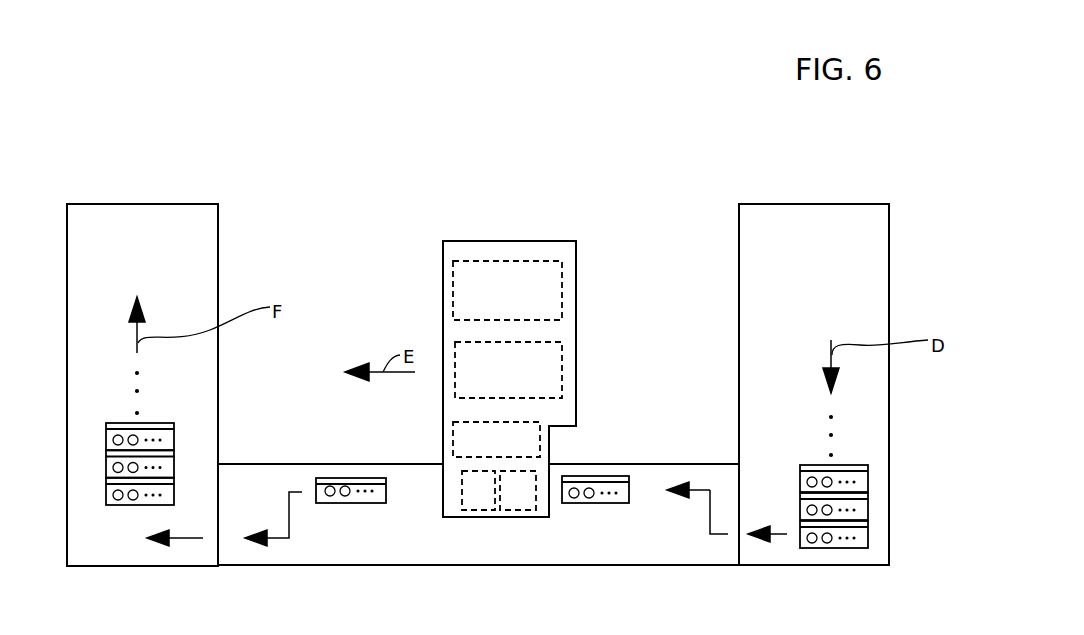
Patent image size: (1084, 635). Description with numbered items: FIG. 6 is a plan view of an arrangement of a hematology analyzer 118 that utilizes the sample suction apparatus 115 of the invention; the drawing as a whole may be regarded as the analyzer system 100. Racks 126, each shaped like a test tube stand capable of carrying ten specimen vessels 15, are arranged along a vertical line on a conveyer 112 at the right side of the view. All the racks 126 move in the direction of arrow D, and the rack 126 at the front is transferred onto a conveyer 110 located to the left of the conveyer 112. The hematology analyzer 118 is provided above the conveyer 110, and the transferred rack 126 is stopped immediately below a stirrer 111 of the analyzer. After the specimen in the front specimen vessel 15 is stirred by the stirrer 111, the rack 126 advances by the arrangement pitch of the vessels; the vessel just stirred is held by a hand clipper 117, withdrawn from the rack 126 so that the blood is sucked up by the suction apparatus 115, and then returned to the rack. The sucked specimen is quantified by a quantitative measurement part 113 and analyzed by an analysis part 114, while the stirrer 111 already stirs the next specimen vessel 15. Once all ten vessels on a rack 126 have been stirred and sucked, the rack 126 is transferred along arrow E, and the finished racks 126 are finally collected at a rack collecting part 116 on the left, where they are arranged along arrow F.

The specimen vessel 15 is at (573, 489).
The substrate processing apparatus 100 is at (812, 483).
The conveyer 110 is at (687, 552).
The stirrer 111 is at (519, 497).
The conveyer 112 is at (848, 225).
The quantitative measurement part 113 is at (544, 363).
The analysis part 114 is at (546, 287).
The suction apparatus 115 is at (443, 440).
The rack collecting part 116 is at (141, 230).
The hand clipper 117 is at (477, 498).
The hematology analyzer 118 is at (505, 240).
The rack 126 is at (128, 508).